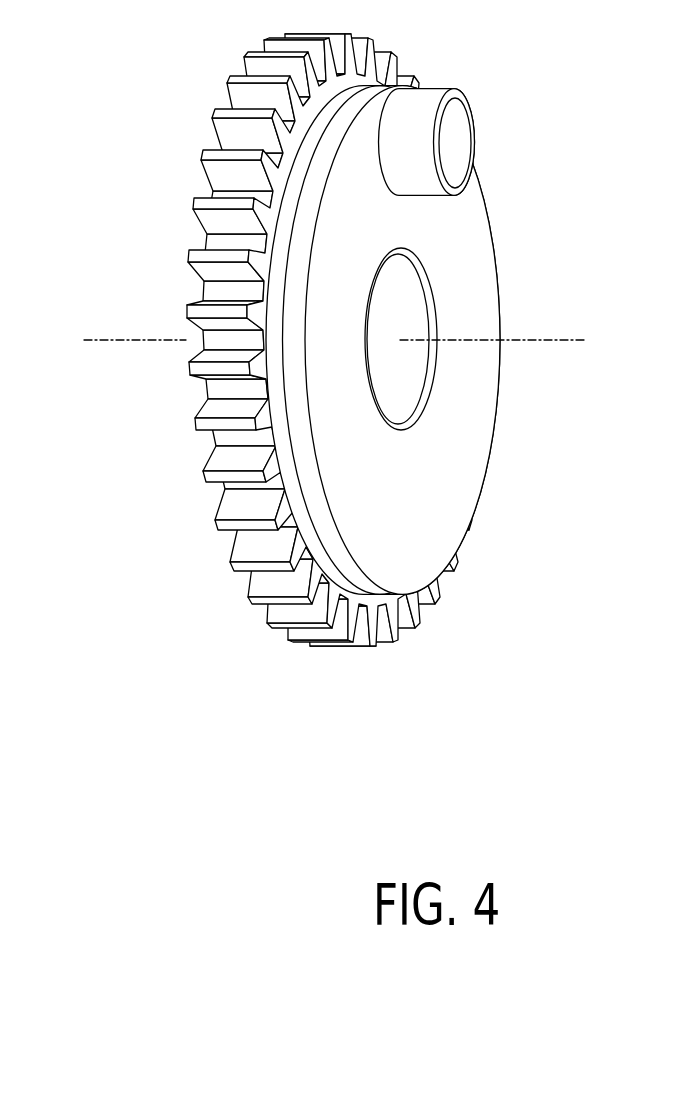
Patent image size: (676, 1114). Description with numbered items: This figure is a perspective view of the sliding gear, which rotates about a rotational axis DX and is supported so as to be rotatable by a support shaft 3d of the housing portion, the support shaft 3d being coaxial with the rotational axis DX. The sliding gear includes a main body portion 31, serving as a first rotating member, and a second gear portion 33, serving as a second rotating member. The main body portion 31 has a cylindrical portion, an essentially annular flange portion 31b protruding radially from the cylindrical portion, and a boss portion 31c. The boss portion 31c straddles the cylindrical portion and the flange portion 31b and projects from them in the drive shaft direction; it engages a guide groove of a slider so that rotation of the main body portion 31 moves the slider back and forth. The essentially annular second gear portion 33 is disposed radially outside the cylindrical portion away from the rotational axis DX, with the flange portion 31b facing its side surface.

The main body portion 31 is at (365, 340).
The second gear portion 33 is at (226, 92).
The flange portion 31b is at (447, 515).
The boss portion 31c is at (458, 118).
The support shaft 3d is at (437, 398).
The rotational axis DX is at (334, 342).